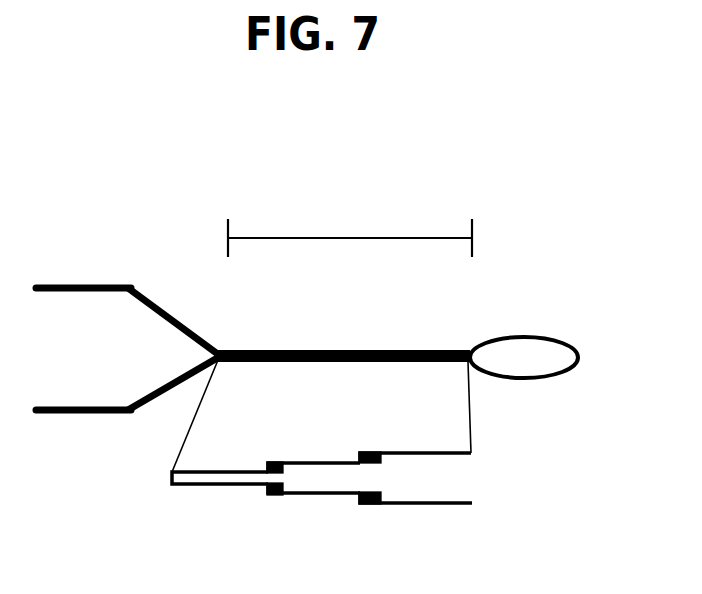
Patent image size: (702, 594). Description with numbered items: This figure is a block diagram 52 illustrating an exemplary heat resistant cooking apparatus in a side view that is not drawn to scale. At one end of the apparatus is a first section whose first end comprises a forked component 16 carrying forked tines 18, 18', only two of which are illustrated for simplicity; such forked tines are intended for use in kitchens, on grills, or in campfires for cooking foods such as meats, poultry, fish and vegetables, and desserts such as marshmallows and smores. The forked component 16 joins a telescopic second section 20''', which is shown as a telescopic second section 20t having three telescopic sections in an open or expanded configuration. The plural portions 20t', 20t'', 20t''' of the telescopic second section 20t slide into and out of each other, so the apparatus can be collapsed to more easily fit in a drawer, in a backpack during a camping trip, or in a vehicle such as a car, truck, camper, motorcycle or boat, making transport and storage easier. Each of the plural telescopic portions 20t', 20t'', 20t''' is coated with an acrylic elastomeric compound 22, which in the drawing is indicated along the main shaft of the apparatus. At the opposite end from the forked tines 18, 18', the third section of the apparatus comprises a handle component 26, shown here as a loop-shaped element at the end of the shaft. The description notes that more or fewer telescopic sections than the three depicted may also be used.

The block diagram 52 is at (520, 140).
The forked component 16 is at (172, 320).
The forked tine 18 is at (106, 263).
The forked tine 18' is at (83, 447).
The acrylic elastomeric compound 22 is at (348, 350).
The handle component 26 is at (527, 335).
The second section 20''' is at (350, 223).
The telescopic second section 20t is at (322, 444).
The telescopic portion 20t' is at (228, 457).
The telescopic portion 20t'' is at (311, 512).
The telescopic portion 20t''' is at (415, 502).